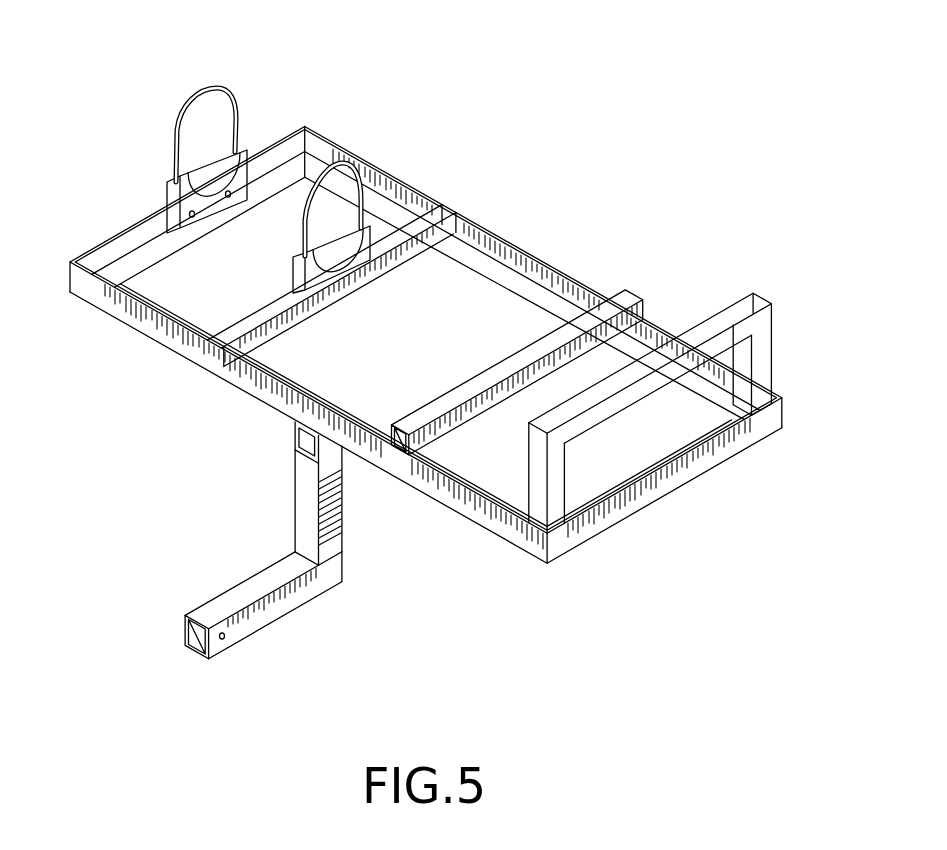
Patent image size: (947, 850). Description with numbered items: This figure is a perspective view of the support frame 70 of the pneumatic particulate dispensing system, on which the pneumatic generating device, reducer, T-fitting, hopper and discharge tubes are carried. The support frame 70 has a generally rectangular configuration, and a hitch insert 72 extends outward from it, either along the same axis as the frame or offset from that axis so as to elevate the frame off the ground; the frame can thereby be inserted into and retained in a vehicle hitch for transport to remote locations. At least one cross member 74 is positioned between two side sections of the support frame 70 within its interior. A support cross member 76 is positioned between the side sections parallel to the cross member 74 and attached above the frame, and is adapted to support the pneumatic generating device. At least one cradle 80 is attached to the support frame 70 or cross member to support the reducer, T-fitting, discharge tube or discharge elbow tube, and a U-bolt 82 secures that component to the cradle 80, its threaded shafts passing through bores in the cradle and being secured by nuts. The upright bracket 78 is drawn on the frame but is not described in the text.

The support frame 70 is at (515, 248).
The hitch insert 72 is at (242, 582).
The cross member 74 is at (323, 310).
The support cross member 76 is at (633, 292).
The upright retaining bracket 78 is at (773, 348).
The cradle 80 is at (165, 200).
The U-bolt 82 is at (196, 100).